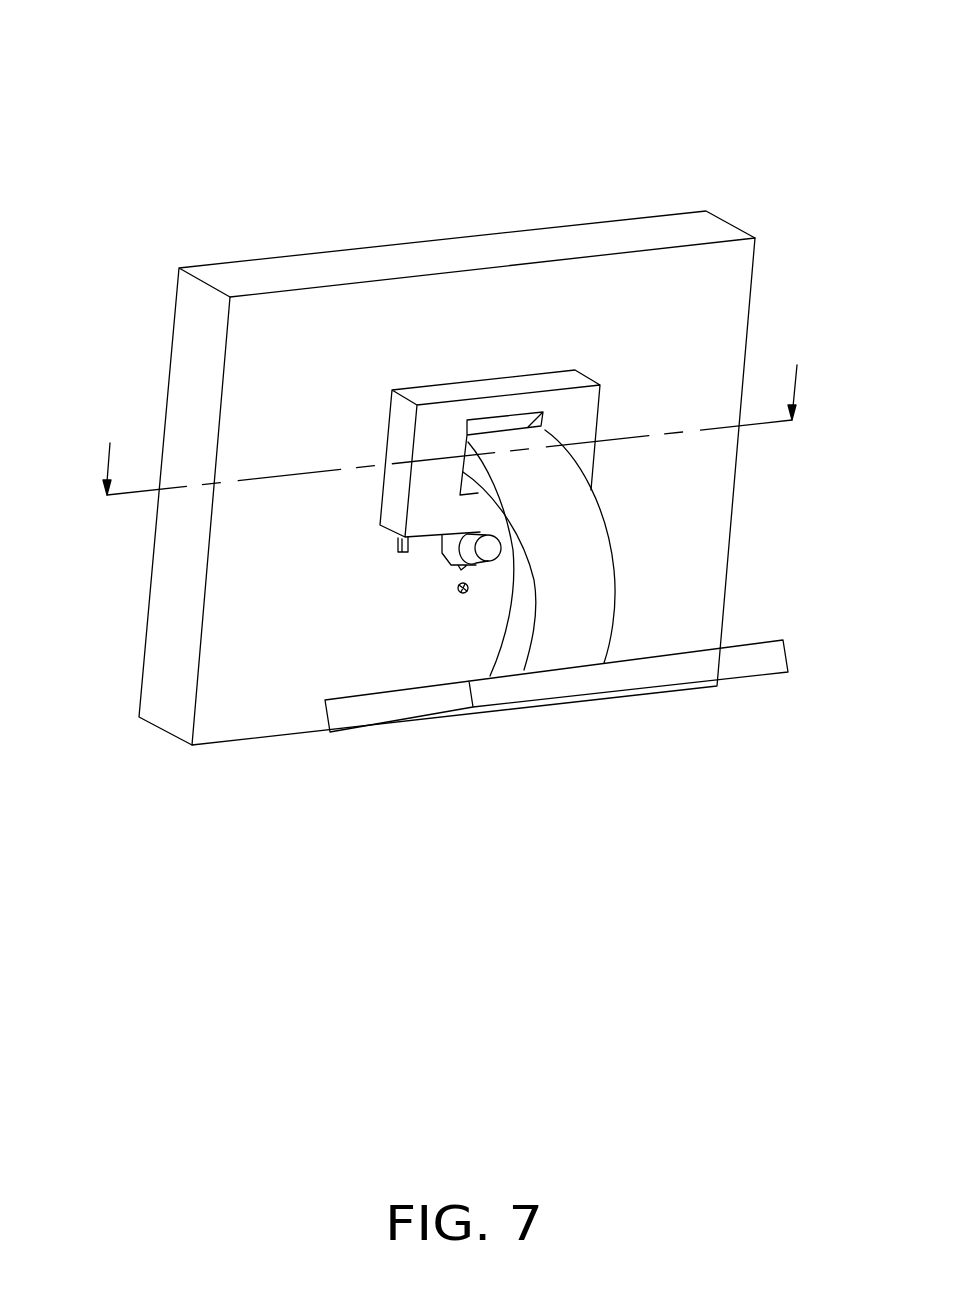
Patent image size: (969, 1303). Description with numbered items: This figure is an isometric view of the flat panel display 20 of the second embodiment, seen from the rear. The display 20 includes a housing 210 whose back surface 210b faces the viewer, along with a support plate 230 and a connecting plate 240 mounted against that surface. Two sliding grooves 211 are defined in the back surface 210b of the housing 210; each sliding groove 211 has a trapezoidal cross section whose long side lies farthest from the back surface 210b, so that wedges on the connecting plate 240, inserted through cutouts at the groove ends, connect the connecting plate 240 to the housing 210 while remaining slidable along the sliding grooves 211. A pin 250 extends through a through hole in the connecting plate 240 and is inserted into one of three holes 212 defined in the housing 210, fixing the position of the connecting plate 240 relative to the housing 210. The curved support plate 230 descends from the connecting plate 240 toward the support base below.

The flat panel display 20 is at (442, 44).
The housing 210 is at (468, 453).
The back surface 210b is at (361, 303).
The sliding groove 211 is at (397, 543).
The hole 212 is at (468, 594).
The support plate 230 is at (582, 553).
The connecting plate 240 is at (552, 378).
The pin 250 is at (488, 550).